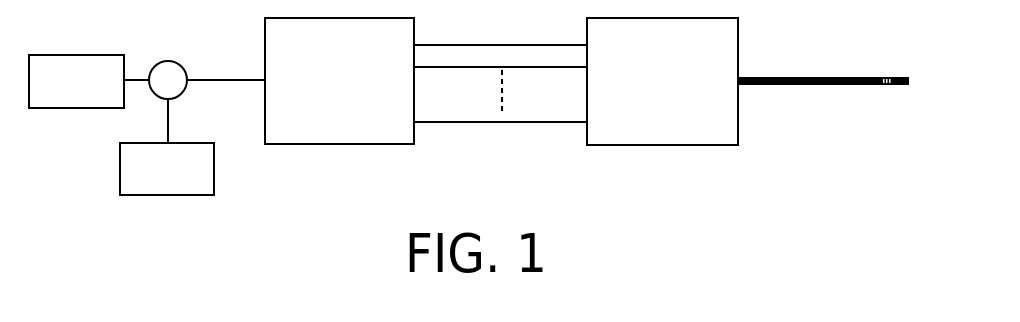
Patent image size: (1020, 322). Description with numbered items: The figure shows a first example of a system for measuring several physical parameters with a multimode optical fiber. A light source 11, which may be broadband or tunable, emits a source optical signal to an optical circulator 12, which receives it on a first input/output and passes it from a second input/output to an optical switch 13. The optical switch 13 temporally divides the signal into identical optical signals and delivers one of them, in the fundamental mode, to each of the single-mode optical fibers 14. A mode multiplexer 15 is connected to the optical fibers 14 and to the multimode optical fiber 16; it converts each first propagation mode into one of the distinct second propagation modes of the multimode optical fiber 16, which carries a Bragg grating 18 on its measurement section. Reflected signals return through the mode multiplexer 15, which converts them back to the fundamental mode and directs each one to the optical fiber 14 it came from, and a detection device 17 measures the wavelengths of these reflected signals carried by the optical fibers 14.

The light source 11 is at (93, 57).
The optical circulator 12 is at (173, 62).
The optical switch 13 is at (320, 147).
The single-mode optical fibers 14 is at (488, 124).
The mode multiplexer/demultiplexer 15 is at (652, 140).
The multimode optical fiber 16 is at (788, 88).
The detection device 17 is at (181, 197).
The Bragg grating 18 is at (887, 88).